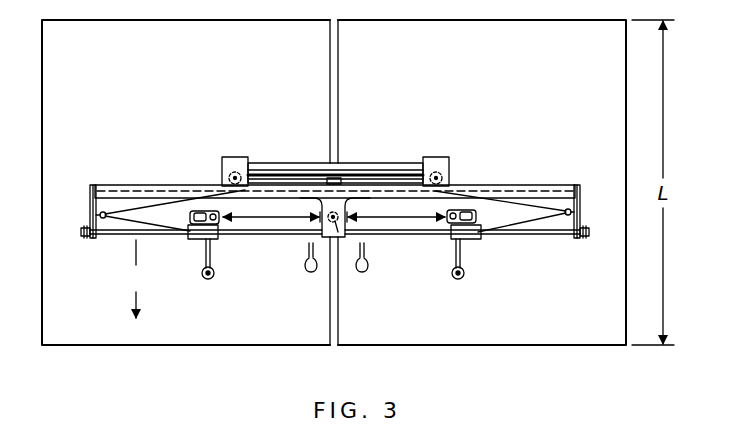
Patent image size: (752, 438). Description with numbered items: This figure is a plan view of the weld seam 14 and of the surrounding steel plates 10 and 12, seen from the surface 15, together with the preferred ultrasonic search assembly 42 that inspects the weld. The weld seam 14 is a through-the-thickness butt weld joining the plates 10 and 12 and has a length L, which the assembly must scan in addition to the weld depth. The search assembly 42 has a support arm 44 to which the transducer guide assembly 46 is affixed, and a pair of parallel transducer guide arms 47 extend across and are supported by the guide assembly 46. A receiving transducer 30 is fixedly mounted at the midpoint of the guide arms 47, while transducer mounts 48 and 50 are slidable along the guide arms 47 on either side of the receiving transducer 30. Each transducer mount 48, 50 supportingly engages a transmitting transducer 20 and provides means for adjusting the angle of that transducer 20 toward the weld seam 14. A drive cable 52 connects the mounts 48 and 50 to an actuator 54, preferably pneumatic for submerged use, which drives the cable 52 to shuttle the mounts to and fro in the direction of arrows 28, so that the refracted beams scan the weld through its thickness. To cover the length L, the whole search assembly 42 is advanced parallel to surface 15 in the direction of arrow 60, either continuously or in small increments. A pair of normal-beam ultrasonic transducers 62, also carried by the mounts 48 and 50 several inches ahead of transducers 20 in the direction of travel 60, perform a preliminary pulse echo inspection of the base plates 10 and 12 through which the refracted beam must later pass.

The steel plate 10 is at (159, 74).
The steel plate 12 is at (506, 74).
The weld seam 14 is at (336, 78).
The surface 15 is at (370, 328).
The transmitting transducer 20 is at (218, 224).
The arrows 28 is at (334, 210).
The receiving transducer 30 is at (364, 258).
The search assembly 42 is at (484, 164).
The support arm 44 is at (343, 181).
The transducer guide assembly 46 is at (200, 189).
The transducer guide arms 47 is at (110, 240).
The transducer mount 48 is at (200, 240).
The transducer mount 50 is at (472, 240).
The drive cable 52 is at (137, 208).
The actuator 54 is at (311, 163).
The arrow 60 is at (136, 279).
The ultrasonic transducers 62 is at (214, 277).